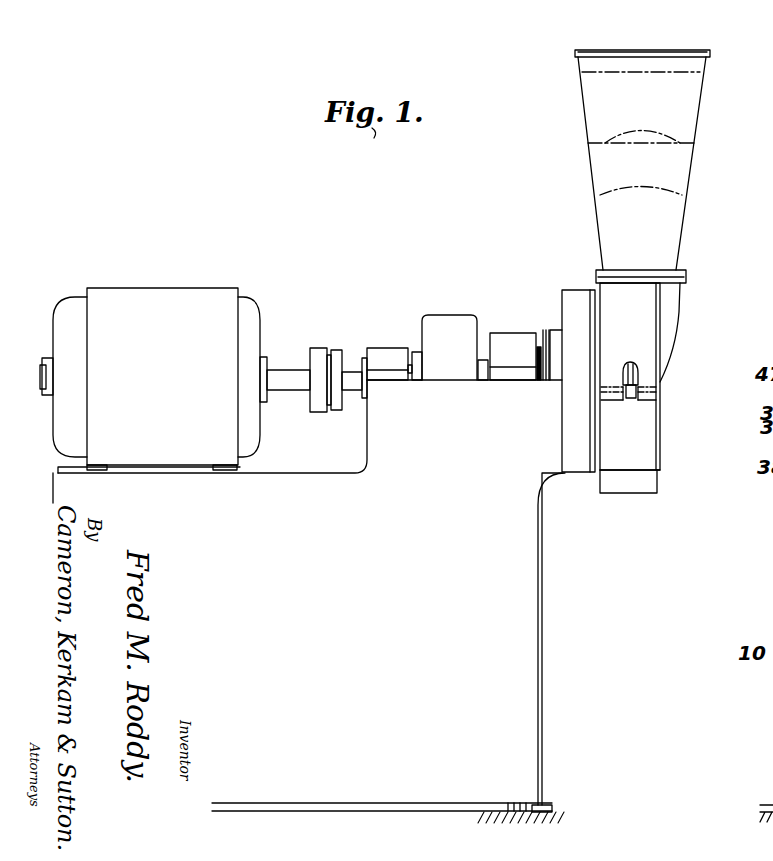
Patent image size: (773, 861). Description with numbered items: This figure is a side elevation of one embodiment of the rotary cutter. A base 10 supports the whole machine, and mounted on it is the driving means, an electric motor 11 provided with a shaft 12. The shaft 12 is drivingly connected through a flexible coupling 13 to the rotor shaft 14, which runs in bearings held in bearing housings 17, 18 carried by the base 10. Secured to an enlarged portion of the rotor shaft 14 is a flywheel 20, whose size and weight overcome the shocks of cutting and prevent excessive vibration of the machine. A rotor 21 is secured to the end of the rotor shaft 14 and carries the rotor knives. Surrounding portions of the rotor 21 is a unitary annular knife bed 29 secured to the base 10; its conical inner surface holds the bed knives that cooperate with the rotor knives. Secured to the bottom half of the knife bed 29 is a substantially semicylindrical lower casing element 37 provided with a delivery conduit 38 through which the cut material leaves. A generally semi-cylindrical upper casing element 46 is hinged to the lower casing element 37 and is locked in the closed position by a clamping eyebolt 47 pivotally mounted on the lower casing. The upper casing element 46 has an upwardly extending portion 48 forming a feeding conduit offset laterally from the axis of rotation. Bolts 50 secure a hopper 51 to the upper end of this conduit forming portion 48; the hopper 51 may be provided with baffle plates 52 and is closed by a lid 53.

The base 10 is at (542, 640).
The electric motor 11 is at (228, 322).
The shaft 12 is at (283, 378).
The flexible coupling 13 is at (332, 352).
The rotor shaft 14 is at (356, 372).
The bearing housing 17 is at (392, 360).
The bearing housing 18 is at (516, 337).
The flywheel 20 is at (448, 318).
The rotor 21 is at (553, 330).
The annular knife bed 29 is at (578, 289).
The lower casing element 37 is at (660, 462).
The delivery conduit 38 is at (648, 490).
The upper casing element 46 is at (655, 340).
The clamping eyebolt 47 is at (640, 376).
The upwardly extending portion 48 is at (680, 310).
The bolts 50 is at (680, 272).
The hopper 51 is at (684, 231).
The baffle plates 52 is at (660, 185).
The lid 53 is at (706, 52).